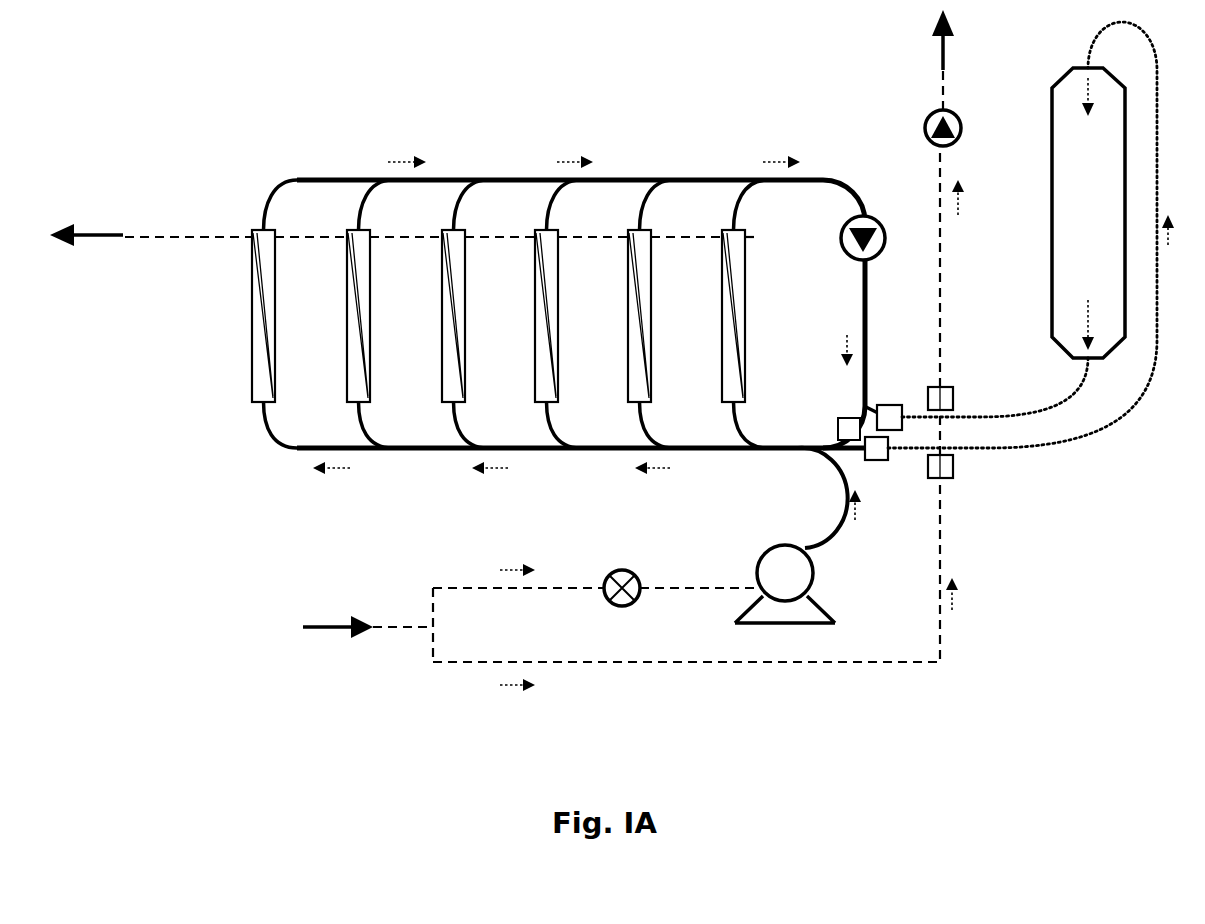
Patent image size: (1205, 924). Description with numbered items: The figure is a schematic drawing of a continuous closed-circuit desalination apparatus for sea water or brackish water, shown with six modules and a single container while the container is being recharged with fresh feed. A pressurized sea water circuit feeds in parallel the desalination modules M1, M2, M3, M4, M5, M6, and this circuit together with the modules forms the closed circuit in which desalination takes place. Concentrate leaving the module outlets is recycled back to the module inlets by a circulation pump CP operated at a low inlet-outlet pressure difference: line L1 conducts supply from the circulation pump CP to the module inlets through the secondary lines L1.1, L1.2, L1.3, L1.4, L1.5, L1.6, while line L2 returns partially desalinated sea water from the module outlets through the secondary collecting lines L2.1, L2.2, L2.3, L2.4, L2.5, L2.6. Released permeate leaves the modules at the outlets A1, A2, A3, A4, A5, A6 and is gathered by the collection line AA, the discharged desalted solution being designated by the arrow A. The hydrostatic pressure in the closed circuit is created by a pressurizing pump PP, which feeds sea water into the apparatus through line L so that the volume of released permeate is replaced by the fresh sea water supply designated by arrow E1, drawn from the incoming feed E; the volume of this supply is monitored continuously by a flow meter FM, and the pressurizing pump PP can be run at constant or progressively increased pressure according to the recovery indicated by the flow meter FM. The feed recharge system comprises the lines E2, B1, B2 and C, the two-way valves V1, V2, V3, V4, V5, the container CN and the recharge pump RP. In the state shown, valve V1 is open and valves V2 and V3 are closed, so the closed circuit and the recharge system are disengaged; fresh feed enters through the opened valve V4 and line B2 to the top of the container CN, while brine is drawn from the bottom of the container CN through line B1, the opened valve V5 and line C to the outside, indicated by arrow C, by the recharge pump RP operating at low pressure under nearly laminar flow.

The released permeate A is at (86, 221).
The permeate collection line AA is at (188, 256).
The desalination module M1 is at (711, 316).
The desalination module M2 is at (617, 316).
The desalination module M3 is at (524, 316).
The desalination module M4 is at (431, 316).
The desalination module M5 is at (336, 316).
The desalination module M6 is at (241, 316).
The module permeate outlet A1 is at (722, 260).
The module permeate outlet A2 is at (656, 260).
The module permeate outlet A3 is at (563, 260).
The module permeate outlet A4 is at (470, 260).
The module permeate outlet A5 is at (376, 260).
The module permeate outlet A6 is at (281, 260).
The secondary collecting line L2.1 is at (723, 205).
The secondary collecting line L2.2 is at (629, 205).
The secondary collecting line L2.3 is at (536, 205).
The secondary collecting line L2.4 is at (443, 205).
The secondary collecting line L2.5 is at (348, 205).
The secondary collecting line L2.6 is at (253, 205).
The secondary inlet line L1.1 is at (723, 425).
The secondary inlet line L1.2 is at (629, 425).
The secondary inlet line L1.3 is at (536, 425).
The secondary inlet line L1.4 is at (443, 425).
The secondary inlet line L1.5 is at (348, 425).
The secondary inlet line L1.6 is at (253, 425).
The recycling line L2 is at (560, 159).
The supply line L1 is at (592, 336).
The circulation pump CP is at (841, 238).
The recharge pump RP is at (919, 128).
The brine discharge line C is at (703, 336).
The container CN is at (1062, 213).
The two-way valve V1 is at (830, 419).
The two-way valve V2 is at (887, 470).
The two-way valve V3 is at (890, 396).
The two-way valve V4 is at (957, 487).
The two-way valve V5 is at (957, 383).
The container bottom line B1 is at (995, 387).
The container top line B2 is at (1031, 254).
The feed line L is at (829, 498).
The pressurizing pump PP is at (774, 579).
The flow meter FM is at (623, 571).
The sea water feed E is at (368, 625).
The fresh sea water supply E1 is at (595, 573).
The feed recharge line E2 is at (566, 682).